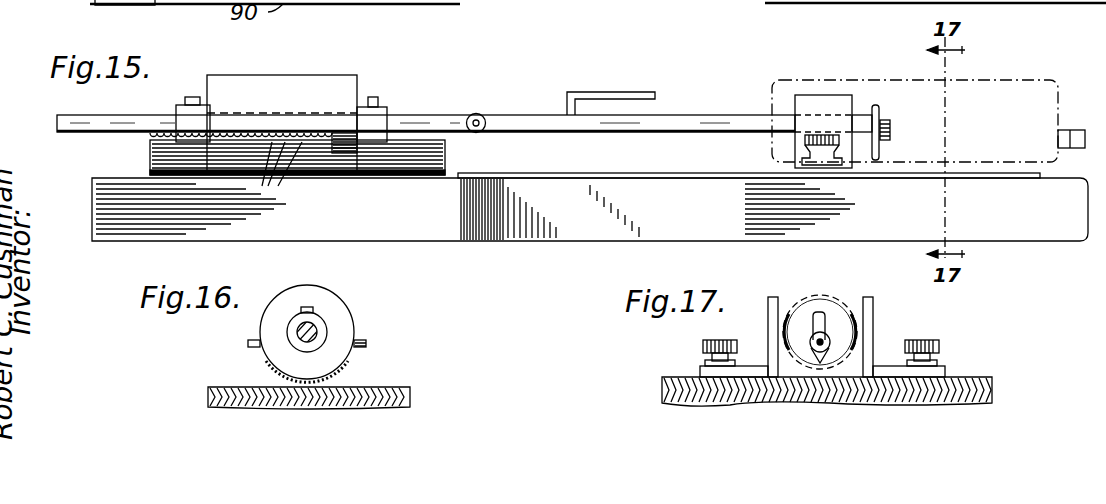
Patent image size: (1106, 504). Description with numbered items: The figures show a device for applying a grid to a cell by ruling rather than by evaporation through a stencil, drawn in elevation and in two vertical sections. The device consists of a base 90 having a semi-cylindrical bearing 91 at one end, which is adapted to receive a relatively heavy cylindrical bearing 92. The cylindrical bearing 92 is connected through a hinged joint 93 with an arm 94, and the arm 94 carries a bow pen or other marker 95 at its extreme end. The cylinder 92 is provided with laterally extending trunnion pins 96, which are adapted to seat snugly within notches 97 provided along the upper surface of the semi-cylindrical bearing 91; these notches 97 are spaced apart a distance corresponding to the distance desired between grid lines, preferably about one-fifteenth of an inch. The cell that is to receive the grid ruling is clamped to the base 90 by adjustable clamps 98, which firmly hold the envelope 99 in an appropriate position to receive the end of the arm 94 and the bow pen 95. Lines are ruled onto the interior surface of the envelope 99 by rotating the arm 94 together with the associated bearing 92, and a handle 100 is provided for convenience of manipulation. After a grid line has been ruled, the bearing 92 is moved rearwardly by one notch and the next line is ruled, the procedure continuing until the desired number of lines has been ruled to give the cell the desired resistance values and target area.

In FIG. 15, the base 90 is at (441, 230).
In FIG. 16, the base 90 is at (412, 394).
In FIG. 17, the base 90 is at (668, 390).
In FIG. 15, the semi-cylindrical bearing 91 is at (208, 170).
In FIG. 16, the semi-cylindrical bearing 91 is at (270, 371).
In FIG. 15, the cylindrical bearing 92 is at (304, 82).
In FIG. 16, the cylindrical bearing 92 is at (334, 312).
In FIG. 15, the hinged joint 93 is at (484, 114).
In FIG. 15, the arm 94 is at (714, 116).
In FIG. 15, the bow pen 95 is at (880, 150).
In FIG. 17, the bow pen 95 is at (826, 315).
In FIG. 15, the trunnion pins 96 is at (230, 133).
In FIG. 16, the trunnion pins 96 is at (248, 343).
In FIG. 15, the notches 97 is at (275, 175).
In FIG. 16, the notches 97 is at (366, 347).
In FIG. 17, the adjustable clamps 98 is at (705, 376).
In FIG. 15, the envelope 99 is at (1003, 80).
In FIG. 17, the envelope 99 is at (808, 295).
In FIG. 15, the handle 100 is at (640, 70).